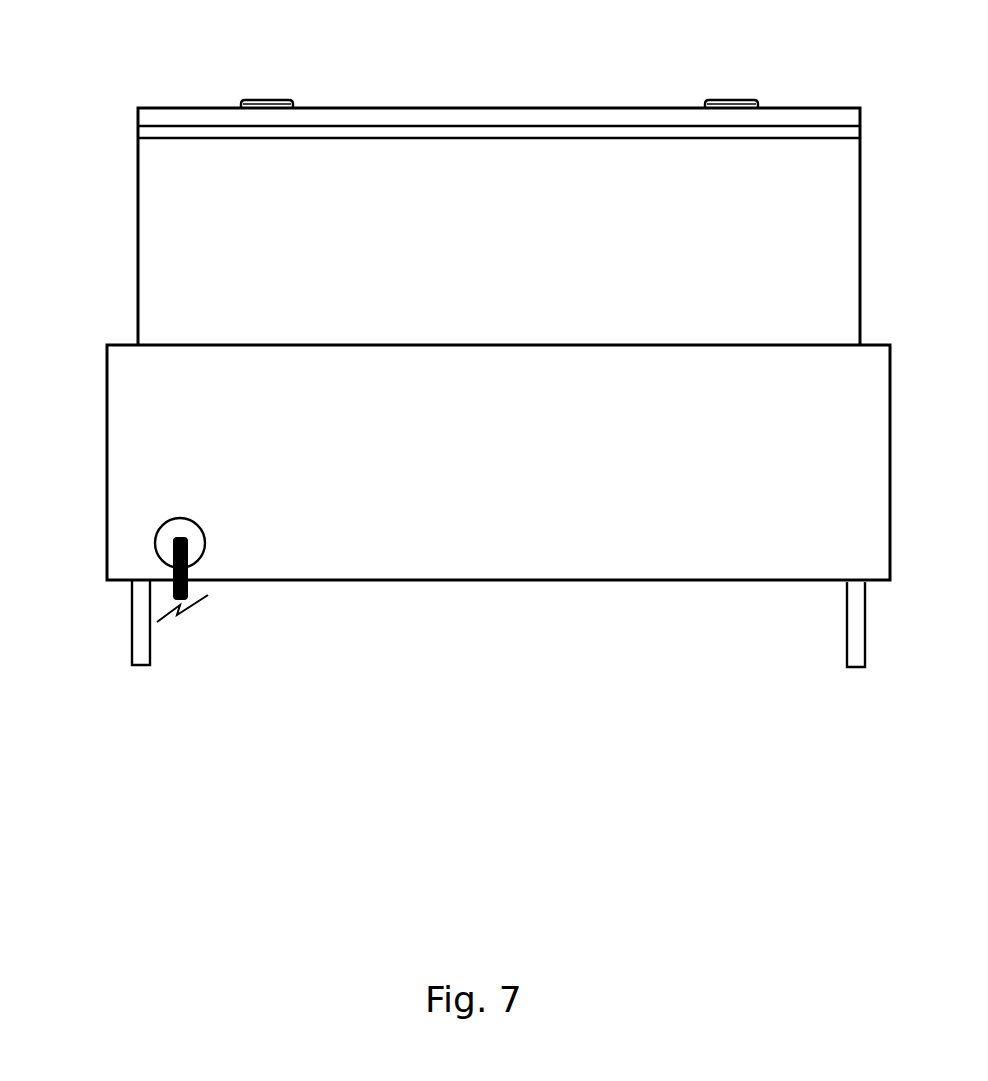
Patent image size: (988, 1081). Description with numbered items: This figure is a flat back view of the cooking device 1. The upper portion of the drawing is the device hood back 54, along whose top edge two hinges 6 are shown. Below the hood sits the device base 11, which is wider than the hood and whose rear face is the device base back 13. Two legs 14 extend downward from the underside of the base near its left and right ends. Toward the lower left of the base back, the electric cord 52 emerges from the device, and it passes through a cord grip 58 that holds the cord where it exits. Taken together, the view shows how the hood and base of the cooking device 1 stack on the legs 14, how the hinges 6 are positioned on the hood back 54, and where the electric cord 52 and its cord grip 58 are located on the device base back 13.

The cooking device 1 is at (468, 378).
The hinges 6 is at (276, 100).
The device base 11 is at (453, 179).
The device base back 13 is at (580, 545).
The legs 14 is at (140, 653).
The electric cord 52 is at (188, 590).
The device hood back 54 is at (603, 177).
The cord grip 58 is at (196, 540).